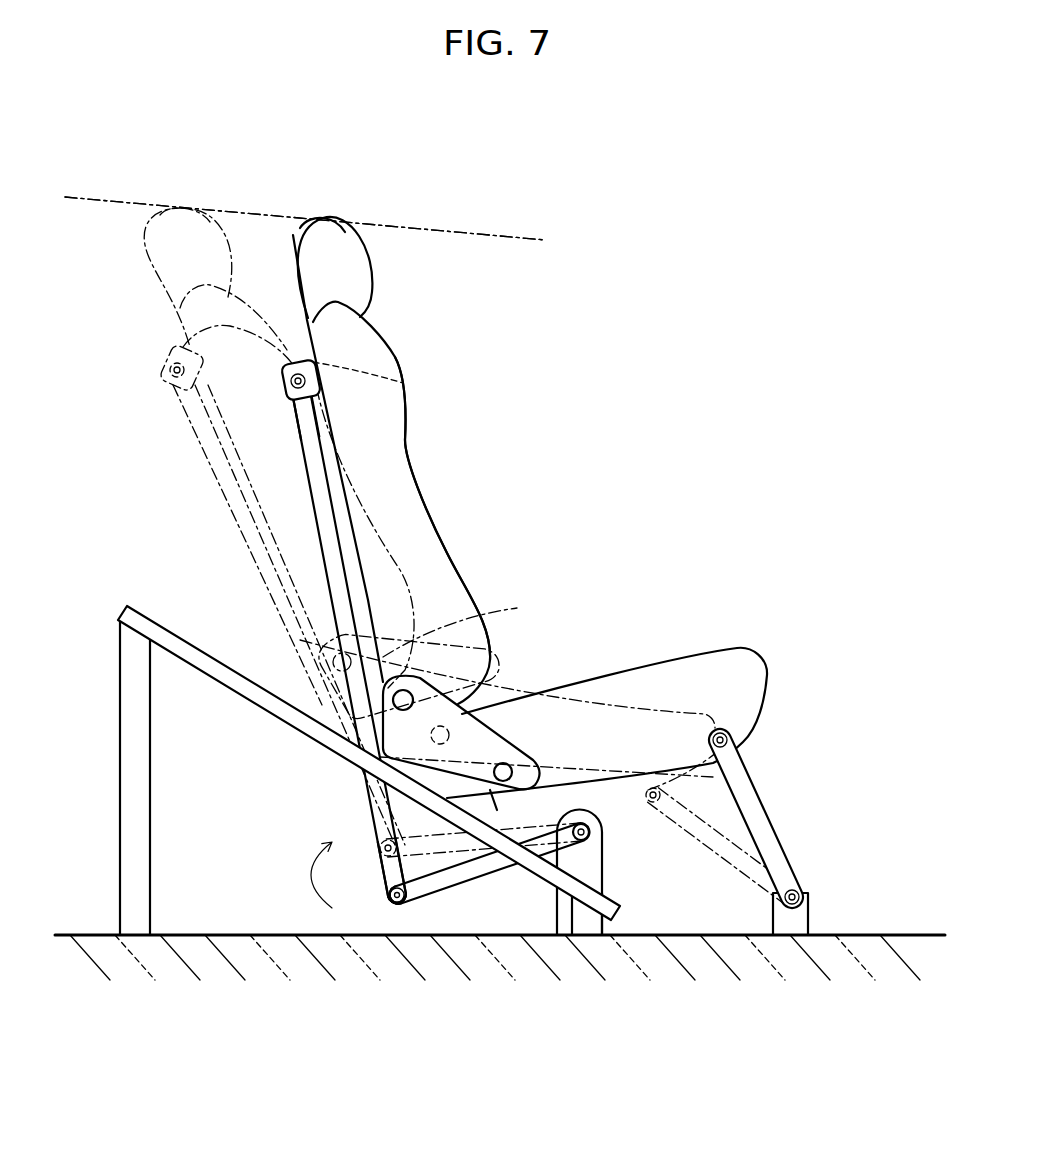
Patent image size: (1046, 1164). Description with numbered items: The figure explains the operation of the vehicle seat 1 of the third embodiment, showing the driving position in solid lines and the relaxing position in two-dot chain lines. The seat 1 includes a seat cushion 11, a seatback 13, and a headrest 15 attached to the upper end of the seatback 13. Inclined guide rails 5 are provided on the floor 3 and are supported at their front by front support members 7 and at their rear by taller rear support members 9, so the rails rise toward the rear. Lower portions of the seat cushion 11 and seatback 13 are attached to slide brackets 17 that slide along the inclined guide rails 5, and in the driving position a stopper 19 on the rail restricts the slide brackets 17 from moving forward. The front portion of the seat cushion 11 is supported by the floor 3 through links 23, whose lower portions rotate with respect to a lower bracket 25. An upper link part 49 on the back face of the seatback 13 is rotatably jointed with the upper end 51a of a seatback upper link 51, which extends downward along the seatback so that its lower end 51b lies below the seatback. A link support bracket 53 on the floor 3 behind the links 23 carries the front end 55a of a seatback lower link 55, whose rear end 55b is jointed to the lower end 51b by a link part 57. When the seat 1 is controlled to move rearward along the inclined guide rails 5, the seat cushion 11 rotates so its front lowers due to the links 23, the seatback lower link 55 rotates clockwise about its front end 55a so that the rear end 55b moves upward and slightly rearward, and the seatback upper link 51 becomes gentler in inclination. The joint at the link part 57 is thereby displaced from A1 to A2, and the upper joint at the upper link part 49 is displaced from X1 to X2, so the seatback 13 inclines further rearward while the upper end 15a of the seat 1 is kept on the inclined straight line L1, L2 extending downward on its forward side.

The seat 1 is at (405, 443).
The floor 3 is at (92, 933).
The inclined guide rails 5 is at (236, 690).
The front support members 7 is at (590, 935).
The rear support members 9 is at (128, 794).
The seat cushion 11 is at (627, 722).
The seatback 13 is at (420, 482).
The headrest 15 is at (157, 263).
The upper end 15a is at (183, 208).
The slide brackets 17 is at (517, 610).
The stopper 19 is at (527, 760).
The links 23 is at (757, 800).
The lower bracket 25 is at (810, 905).
The upper link part 49 is at (403, 382).
The seatback upper link 51 is at (322, 523).
The upper end 51a is at (299, 405).
The lower end 51b is at (385, 880).
The link support bracket 53 is at (603, 883).
The seatback lower link 55 is at (490, 870).
The front end 55a is at (588, 846).
The rear end 55b is at (447, 850).
The link part 57 is at (412, 908).
The upper joint point in driving position X1 is at (285, 380).
The upper joint point in relaxing position X2 is at (165, 368).
The link joint point in driving position A1 is at (376, 902).
The link joint point in relaxing position A2 is at (353, 872).
The inclined straight line L1 is at (501, 228).
The inclined straight line L2 is at (305, 218).